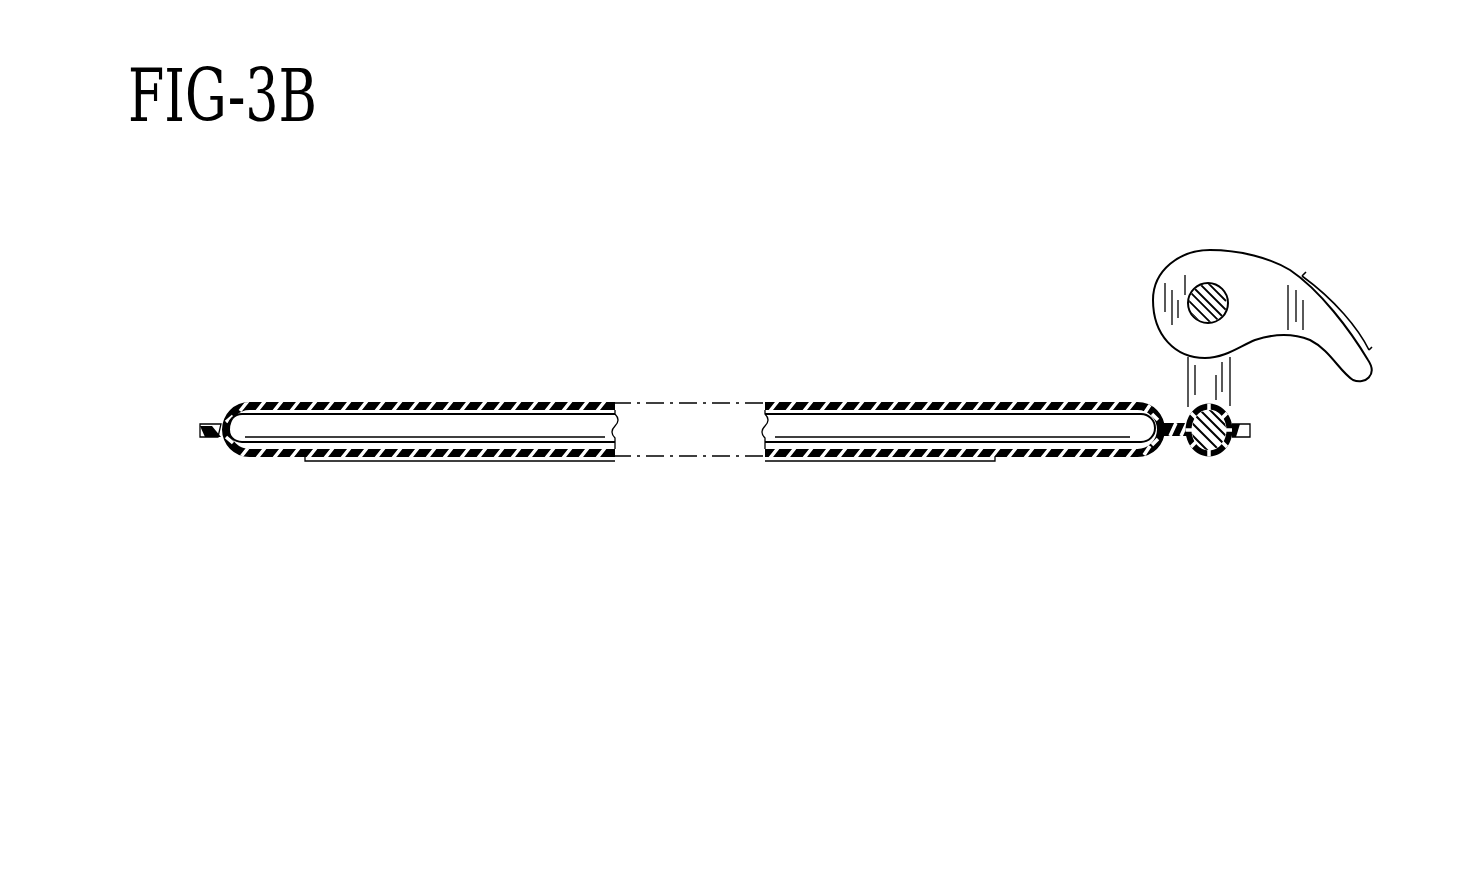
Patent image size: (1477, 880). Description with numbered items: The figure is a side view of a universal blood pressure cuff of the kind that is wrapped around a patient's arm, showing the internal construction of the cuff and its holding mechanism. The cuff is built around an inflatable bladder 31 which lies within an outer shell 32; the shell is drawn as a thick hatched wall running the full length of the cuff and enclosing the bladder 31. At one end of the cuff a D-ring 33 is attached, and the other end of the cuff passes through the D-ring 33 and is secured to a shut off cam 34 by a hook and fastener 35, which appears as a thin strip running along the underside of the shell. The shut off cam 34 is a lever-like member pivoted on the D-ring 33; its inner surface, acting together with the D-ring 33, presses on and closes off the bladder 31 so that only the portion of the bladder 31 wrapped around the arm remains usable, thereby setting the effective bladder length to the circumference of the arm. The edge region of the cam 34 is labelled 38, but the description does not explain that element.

The bladder 31 is at (806, 432).
The outer shell 32 is at (978, 405).
The D-ring 33 is at (1213, 387).
The shut off cam 34 is at (1283, 280).
The hook and fastener 35 is at (982, 461).
The lever rim edge 38 is at (1372, 345).